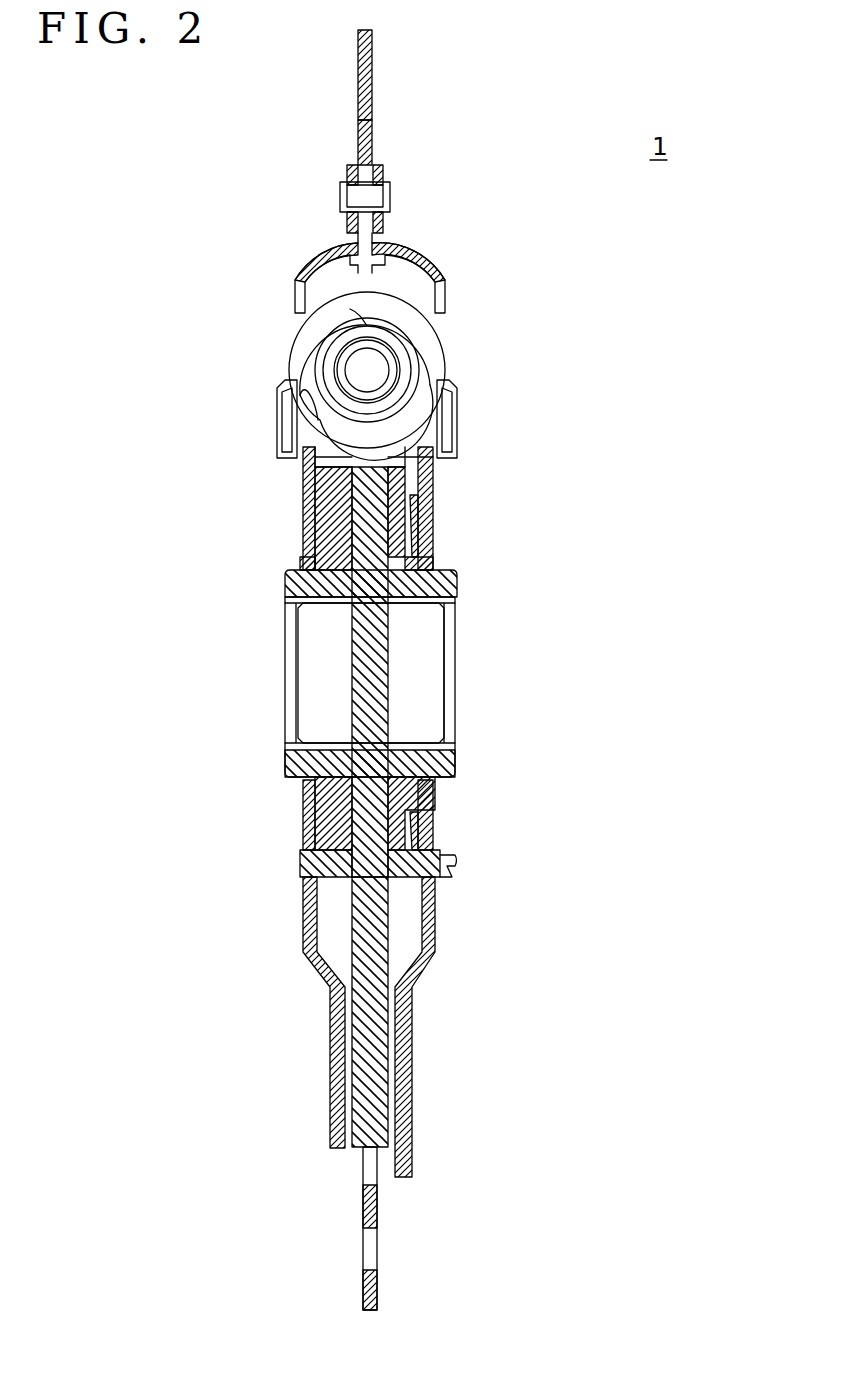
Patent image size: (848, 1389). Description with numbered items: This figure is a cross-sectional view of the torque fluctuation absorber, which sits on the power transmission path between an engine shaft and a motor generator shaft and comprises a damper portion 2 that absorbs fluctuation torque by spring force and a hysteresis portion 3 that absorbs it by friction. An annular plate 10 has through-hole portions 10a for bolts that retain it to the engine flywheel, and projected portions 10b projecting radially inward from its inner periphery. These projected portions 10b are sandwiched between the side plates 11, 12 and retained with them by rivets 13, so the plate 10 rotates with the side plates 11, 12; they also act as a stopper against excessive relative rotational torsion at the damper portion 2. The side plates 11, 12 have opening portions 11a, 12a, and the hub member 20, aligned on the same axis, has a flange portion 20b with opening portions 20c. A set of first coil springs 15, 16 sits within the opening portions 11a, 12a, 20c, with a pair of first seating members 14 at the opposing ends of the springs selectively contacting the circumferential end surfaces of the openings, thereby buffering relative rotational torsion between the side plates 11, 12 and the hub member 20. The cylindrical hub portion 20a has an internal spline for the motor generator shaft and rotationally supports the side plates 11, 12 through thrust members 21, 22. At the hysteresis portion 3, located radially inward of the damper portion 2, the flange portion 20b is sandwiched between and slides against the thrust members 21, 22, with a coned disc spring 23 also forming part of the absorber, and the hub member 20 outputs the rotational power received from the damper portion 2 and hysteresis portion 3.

The damper portion 2 is at (452, 368).
The hysteresis portion 3 is at (455, 505).
The plate 10 is at (362, 120).
The through-hole portions 10a is at (368, 71).
The projected portions 10b is at (358, 185).
The side plate 11 is at (352, 220).
The opening portion 11a is at (305, 285).
The side plate 12 is at (380, 220).
The opening portion 12a is at (423, 283).
The rivets 13 is at (385, 196).
The first seating members 14 is at (313, 320).
The first coil spring 15 is at (432, 350).
The first coil spring 16 is at (318, 358).
The hub member 20 is at (462, 668).
The hub portion 20a is at (285, 580).
The flange portion 20b is at (372, 1040).
The opening portions 20c is at (318, 458).
The thrust member 21 is at (318, 515).
The thrust member 22 is at (400, 478).
The coned disc spring 23 is at (410, 538).